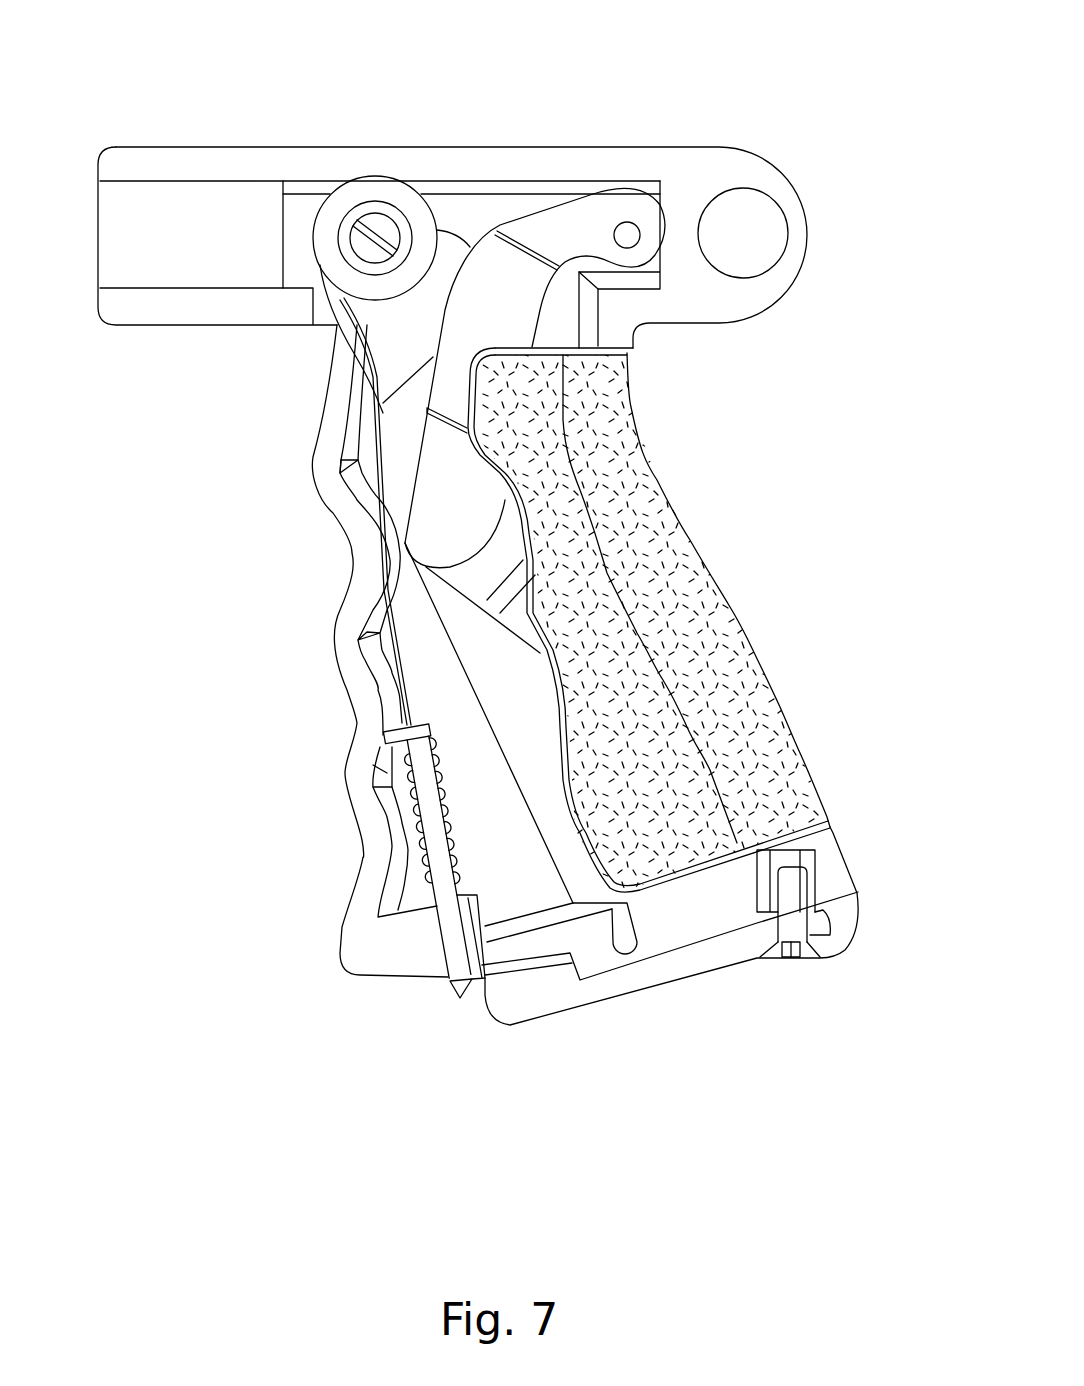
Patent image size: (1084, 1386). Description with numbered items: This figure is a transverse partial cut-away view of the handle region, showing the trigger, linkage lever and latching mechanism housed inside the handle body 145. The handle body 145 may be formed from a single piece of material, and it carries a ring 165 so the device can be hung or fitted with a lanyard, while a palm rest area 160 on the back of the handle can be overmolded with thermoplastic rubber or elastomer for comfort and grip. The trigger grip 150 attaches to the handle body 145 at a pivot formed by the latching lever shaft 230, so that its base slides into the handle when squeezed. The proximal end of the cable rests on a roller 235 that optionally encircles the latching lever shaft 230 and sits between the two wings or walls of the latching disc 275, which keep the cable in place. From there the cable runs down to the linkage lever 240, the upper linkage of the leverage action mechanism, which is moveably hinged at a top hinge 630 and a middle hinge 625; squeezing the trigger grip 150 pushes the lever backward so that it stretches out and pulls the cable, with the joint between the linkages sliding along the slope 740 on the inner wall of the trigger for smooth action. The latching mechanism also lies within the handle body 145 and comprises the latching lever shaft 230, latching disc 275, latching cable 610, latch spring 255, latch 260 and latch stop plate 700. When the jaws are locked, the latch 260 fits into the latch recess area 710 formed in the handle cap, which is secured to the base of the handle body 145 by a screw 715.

The handle body 145 is at (245, 147).
The trigger grip 150 is at (373, 866).
The palm rest area 160 is at (747, 637).
The ring 165 is at (742, 232).
The latching lever shaft 230 is at (368, 236).
The roller 235 is at (376, 210).
The linkage lever (upper linkage) 240 is at (510, 310).
The latch spring 255 is at (403, 779).
The latch 260 is at (450, 990).
The latching disc 275 is at (397, 198).
The latching cable 610 is at (380, 450).
The middle hinge 625 is at (460, 502).
The top hinge 630 is at (634, 243).
The latch stop plate 700 is at (387, 736).
The latch recess area 710 is at (588, 962).
The screw 715 is at (792, 957).
The slope 740 is at (483, 710).